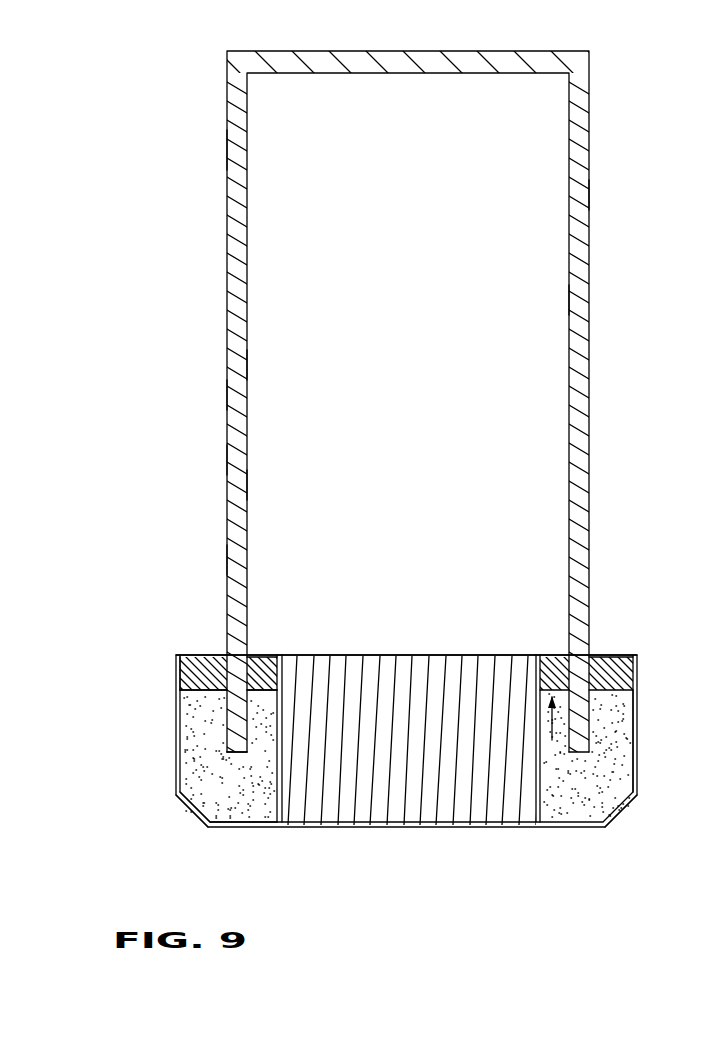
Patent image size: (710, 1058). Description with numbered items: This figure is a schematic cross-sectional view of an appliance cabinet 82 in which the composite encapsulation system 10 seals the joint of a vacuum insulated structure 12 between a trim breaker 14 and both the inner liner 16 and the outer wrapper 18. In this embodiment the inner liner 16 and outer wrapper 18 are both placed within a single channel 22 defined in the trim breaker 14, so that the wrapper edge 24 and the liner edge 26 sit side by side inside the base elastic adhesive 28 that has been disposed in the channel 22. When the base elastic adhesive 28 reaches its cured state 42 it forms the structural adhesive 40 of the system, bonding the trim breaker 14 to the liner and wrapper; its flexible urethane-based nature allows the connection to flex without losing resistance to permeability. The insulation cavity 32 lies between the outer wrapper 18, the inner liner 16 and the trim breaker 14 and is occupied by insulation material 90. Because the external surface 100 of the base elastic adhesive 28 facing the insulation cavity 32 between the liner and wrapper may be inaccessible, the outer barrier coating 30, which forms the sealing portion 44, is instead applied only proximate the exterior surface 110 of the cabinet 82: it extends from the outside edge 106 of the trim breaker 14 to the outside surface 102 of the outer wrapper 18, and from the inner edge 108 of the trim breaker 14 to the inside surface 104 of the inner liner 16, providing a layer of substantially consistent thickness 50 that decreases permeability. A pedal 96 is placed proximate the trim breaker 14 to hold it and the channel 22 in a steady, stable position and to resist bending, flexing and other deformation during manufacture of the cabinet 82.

The composite encapsulation system 10 is at (665, 630).
The vacuum insulated structure 12 is at (630, 103).
The trim breaker 14 is at (183, 828).
The inner liner 16 is at (247, 362).
The outer wrapper 18 is at (227, 393).
The channel 22 is at (258, 648).
The wrapper edge 24 is at (247, 752).
The liner edge 26 is at (245, 753).
The base elastic adhesive 28 is at (190, 790).
The outer barrier coating 30 is at (207, 672).
The insulation cavity 32 is at (590, 193).
The structural adhesive 40 is at (600, 796).
The cured state 42 is at (617, 722).
The sealing portion 44 is at (604, 653).
The substantially consistent thickness 50 is at (551, 655).
The structural cabinet 82 is at (203, 458).
The insulation material 90 is at (580, 297).
The pedal 96 is at (430, 795).
The external surface 100 is at (185, 686).
The outside surface 102 is at (227, 560).
The inside surface 104 is at (247, 486).
The outside edge 106 is at (180, 670).
The inner edge 108 is at (277, 657).
The exterior surface 110 is at (227, 148).